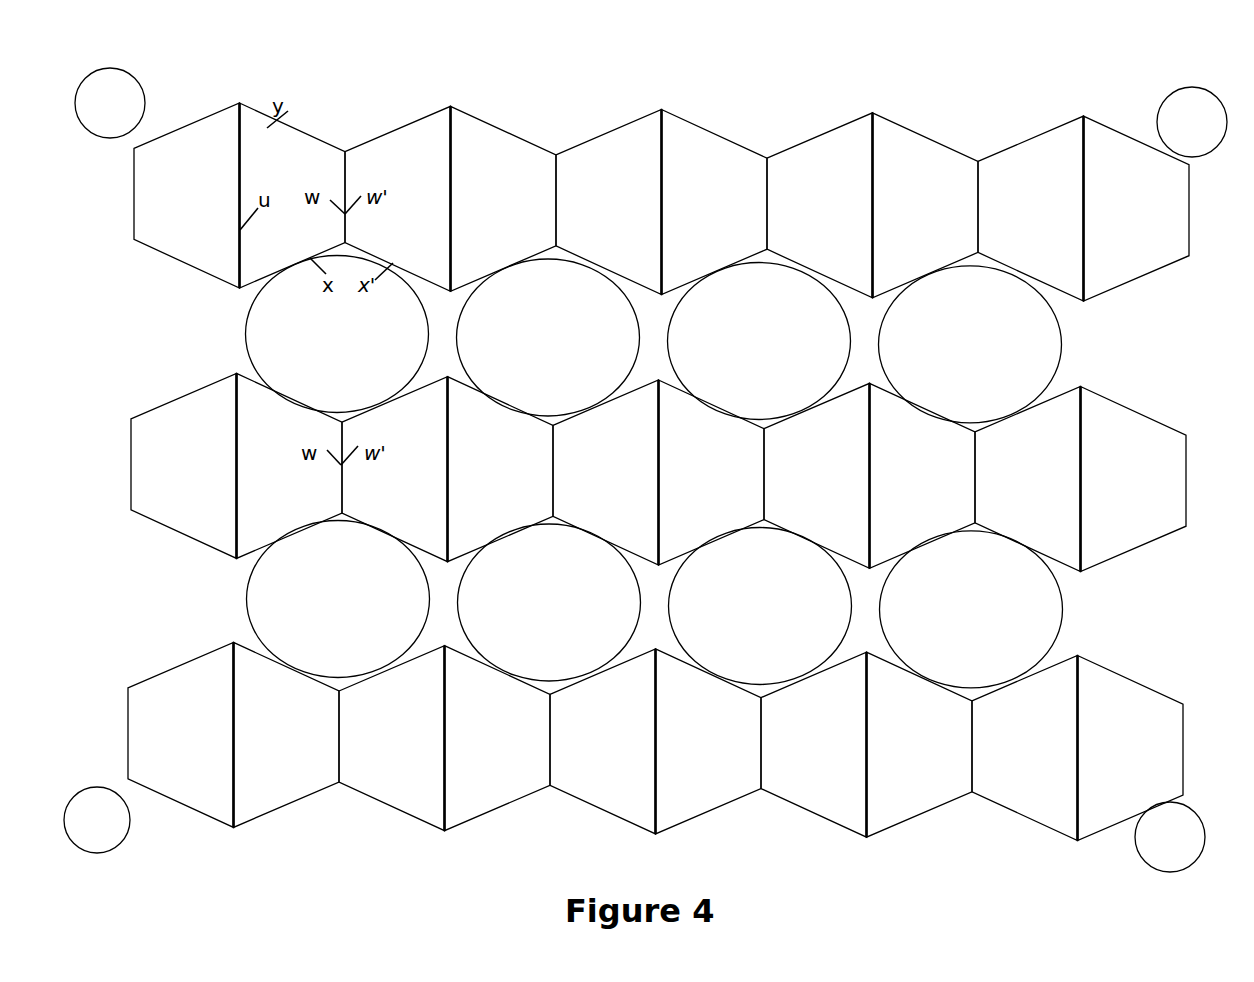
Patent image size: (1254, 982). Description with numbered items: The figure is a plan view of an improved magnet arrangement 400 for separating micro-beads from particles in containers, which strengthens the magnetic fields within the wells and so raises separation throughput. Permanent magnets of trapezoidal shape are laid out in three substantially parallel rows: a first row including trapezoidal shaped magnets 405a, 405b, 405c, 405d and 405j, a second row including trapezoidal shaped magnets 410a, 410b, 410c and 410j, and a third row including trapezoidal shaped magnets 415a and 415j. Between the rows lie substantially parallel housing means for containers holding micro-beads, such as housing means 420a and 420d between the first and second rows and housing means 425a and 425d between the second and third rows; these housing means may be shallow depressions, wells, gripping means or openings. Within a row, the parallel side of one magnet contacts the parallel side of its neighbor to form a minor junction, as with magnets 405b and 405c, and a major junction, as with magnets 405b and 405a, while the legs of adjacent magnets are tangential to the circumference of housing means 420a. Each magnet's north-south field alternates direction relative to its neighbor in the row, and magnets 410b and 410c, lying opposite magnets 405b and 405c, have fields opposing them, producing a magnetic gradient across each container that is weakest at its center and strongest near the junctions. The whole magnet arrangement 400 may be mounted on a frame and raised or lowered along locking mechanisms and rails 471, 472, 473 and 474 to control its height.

The magnet arrangement 400 is at (663, 496).
The trapezoidal shaped magnet 405a is at (172, 133).
The trapezoidal shaped magnet 405b is at (317, 137).
The trapezoidal shaped magnet 405c is at (410, 128).
The trapezoidal shaped magnet 405d is at (520, 133).
The trapezoidal shaped magnet 405j is at (1137, 140).
The trapezoidal shaped magnet 410a is at (162, 525).
The trapezoidal shaped magnet 410b is at (305, 517).
The trapezoidal shaped magnet 410c is at (428, 448).
The trapezoidal shaped magnet 410j is at (1155, 522).
The trapezoidal shaped magnet 415a is at (147, 752).
The trapezoidal shaped magnet 415j is at (1168, 755).
The housing means 420a is at (246, 337).
The housing means 420d is at (1043, 353).
The housing means 425a is at (267, 625).
The housing means 425d is at (1043, 618).
The locking mechanism and rail 471 is at (110, 103).
The locking mechanism and rail 472 is at (1192, 122).
The locking mechanism and rail 473 is at (1170, 837).
The locking mechanism and rail 474 is at (97, 820).